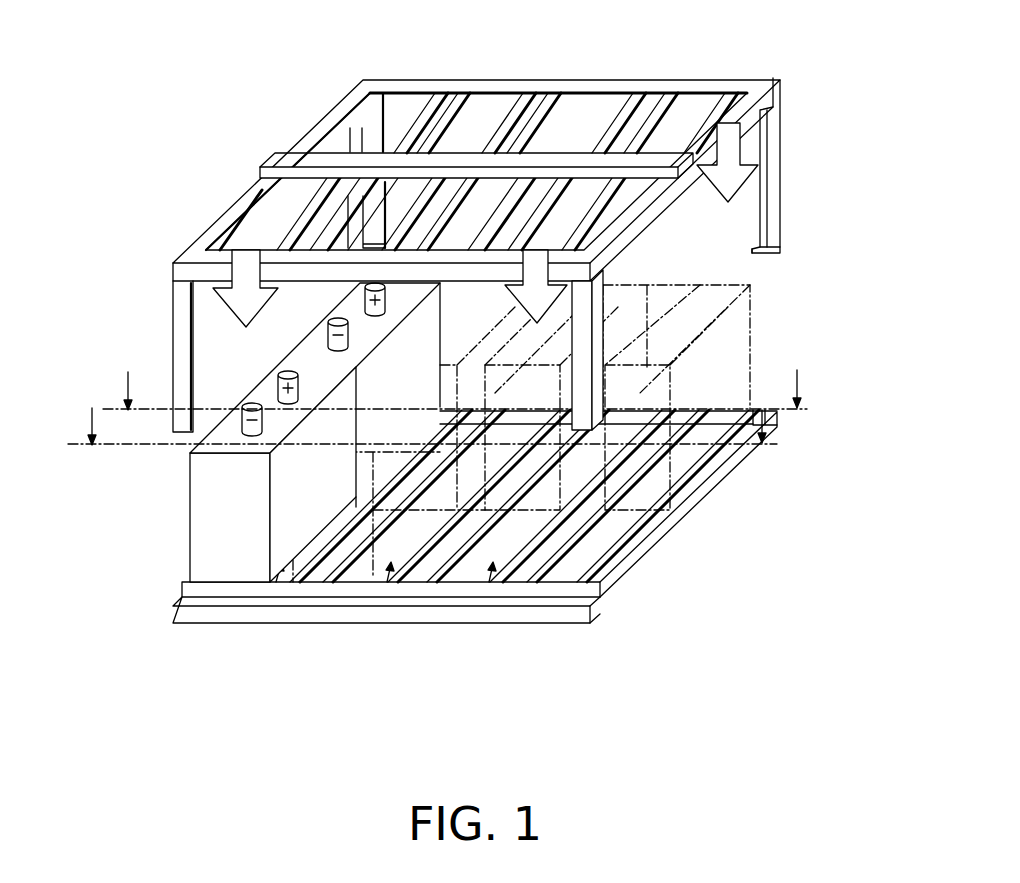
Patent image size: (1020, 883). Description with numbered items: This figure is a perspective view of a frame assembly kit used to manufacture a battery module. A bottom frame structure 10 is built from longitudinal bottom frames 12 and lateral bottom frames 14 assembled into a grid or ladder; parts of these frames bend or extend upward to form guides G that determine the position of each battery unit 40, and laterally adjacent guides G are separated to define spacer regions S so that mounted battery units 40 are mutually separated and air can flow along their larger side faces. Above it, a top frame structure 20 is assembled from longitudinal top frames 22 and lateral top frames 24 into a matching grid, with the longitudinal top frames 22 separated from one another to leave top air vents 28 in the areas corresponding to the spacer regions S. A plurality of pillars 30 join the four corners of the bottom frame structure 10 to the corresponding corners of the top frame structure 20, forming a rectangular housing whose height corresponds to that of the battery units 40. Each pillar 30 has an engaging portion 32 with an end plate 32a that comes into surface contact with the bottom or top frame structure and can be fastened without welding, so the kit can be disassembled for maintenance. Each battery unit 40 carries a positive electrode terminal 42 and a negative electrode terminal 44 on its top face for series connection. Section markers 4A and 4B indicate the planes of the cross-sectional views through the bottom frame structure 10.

The bottom frame structure 10 is at (499, 494).
The longitudinal bottom frame 12 is at (710, 480).
The lateral bottom frame 14 is at (706, 404).
The top frame structure 20 is at (480, 222).
The longitudinal top frame 22 is at (335, 117).
The lateral top frame 24 is at (278, 152).
The top air vent 28 is at (553, 97).
The pillar 30 is at (773, 165).
The engaging portion 32 is at (771, 252).
The end plate 32a is at (750, 249).
The battery unit 40 is at (272, 431).
The positive electrode terminal 42 is at (365, 293).
The negative electrode terminal 44 is at (330, 323).
The section line 4A is at (458, 375).
The section line 4B is at (423, 410).
The guide G is at (777, 423).
The spacer region S is at (286, 606).